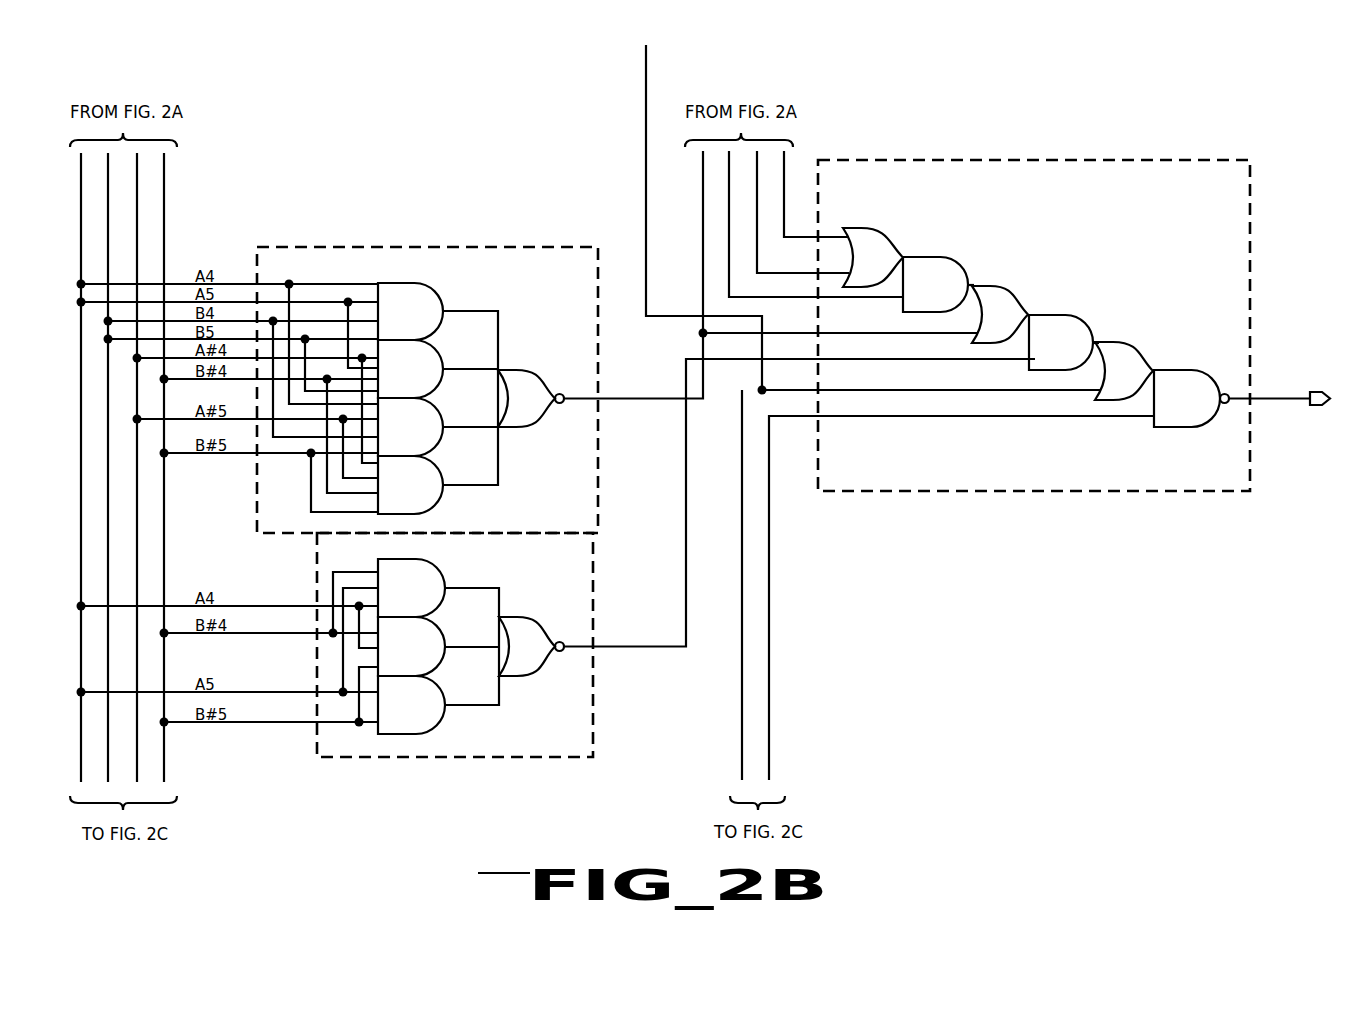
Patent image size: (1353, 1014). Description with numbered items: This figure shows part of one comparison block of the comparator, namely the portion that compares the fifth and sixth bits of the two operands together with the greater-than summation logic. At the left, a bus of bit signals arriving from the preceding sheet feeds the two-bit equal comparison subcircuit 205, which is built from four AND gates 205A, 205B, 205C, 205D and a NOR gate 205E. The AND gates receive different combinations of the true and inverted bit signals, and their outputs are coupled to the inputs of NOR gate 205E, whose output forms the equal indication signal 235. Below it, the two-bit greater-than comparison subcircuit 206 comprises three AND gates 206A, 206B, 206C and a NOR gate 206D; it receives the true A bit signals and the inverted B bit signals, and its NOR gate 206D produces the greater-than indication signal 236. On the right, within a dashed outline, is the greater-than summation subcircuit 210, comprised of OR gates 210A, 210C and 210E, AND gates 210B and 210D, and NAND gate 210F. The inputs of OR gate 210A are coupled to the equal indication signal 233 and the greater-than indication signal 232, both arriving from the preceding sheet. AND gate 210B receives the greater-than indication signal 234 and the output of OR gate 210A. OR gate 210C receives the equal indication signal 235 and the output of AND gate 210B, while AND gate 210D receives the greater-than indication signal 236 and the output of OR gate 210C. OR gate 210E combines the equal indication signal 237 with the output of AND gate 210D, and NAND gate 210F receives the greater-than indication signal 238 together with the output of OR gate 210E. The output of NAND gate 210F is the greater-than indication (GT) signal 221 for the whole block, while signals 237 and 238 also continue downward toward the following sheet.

The 2-bit equal comparison subcircuit 205 is at (427, 390).
The AND gate 205A is at (441, 294).
The AND gate 205B is at (443, 357).
The AND gate 205C is at (437, 447).
The AND gate 205D is at (437, 503).
The NOR gate 205E is at (543, 370).
The 2-bit greater-than comparison subcircuit 206 is at (455, 645).
The AND gate 206A is at (443, 573).
The AND gate 206B is at (442, 653).
The AND gate 206C is at (441, 721).
The NOR gate 206D is at (538, 671).
The greater-than summation subcircuit 210 is at (1034, 325).
The OR gate 210A is at (881, 231).
The AND gate 210B is at (956, 258).
The OR gate 210C is at (1018, 295).
The AND gate 210D is at (1093, 299).
The OR gate 210E is at (1136, 343).
The NAND gate 210F is at (1205, 370).
The greater-than indication (GT) signal 221 is at (1292, 401).
The greater-than indication signal 232 is at (784, 176).
The equal indication signal 233 is at (757, 213).
The greater-than indication signal 234 is at (729, 246).
The equal indication signal 235 is at (646, 398).
The greater-than indication signal 236 is at (652, 646).
The equal indication signal 237 is at (645, 93).
The greater-than indication signal 238 is at (769, 730).